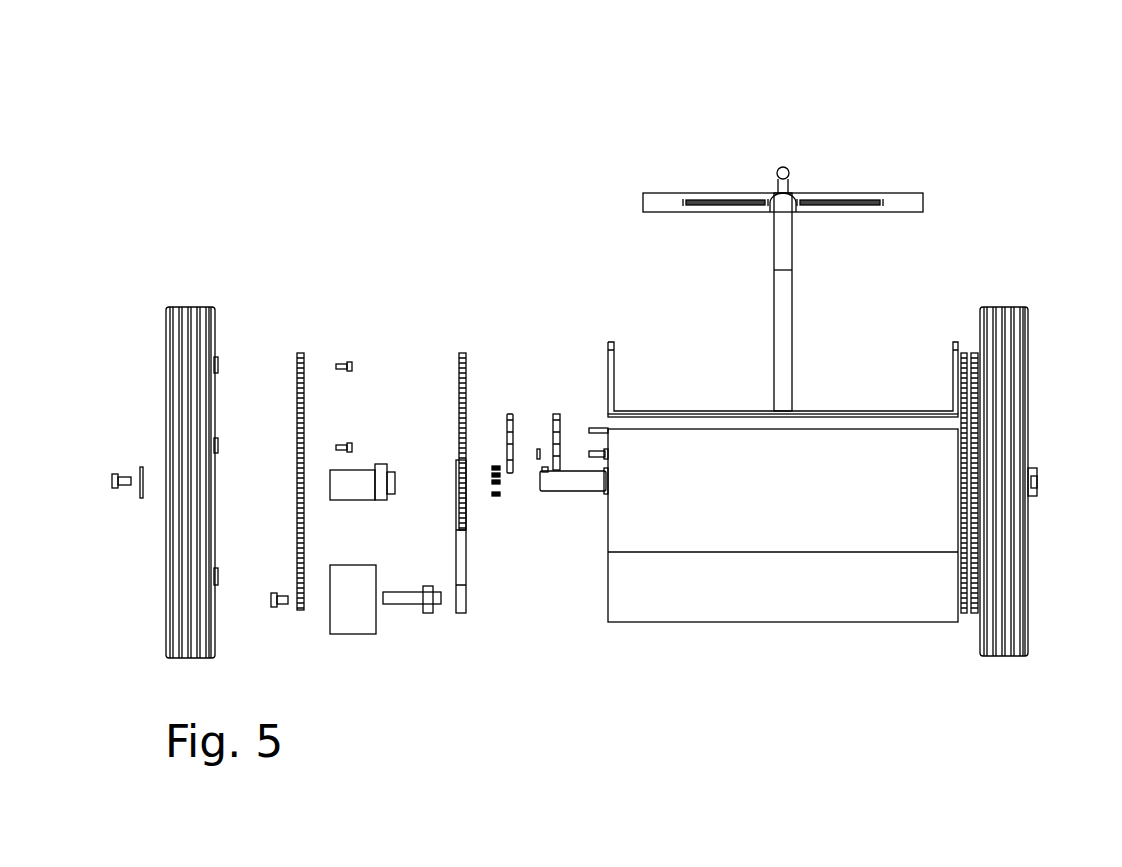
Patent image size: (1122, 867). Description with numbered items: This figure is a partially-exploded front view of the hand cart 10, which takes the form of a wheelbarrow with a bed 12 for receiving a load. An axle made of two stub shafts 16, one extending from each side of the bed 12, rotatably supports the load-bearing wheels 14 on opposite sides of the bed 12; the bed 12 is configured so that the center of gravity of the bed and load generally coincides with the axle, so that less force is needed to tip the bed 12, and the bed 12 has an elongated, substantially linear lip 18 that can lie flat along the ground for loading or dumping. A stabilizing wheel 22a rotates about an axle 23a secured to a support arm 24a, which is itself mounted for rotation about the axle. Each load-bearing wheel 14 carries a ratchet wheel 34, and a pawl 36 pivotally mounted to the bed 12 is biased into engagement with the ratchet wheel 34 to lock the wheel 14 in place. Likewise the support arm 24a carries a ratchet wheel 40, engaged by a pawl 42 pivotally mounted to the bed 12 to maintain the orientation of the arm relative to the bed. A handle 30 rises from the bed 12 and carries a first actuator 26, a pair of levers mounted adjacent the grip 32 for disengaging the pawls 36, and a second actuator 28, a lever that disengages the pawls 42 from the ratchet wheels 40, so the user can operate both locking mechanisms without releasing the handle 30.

The hand cart 10 is at (738, 397).
The bed 12 is at (783, 518).
The load-bearing wheels 14 is at (185, 338).
The stub shafts 16 is at (580, 484).
The lip 18 is at (848, 410).
The stabilizing wheel 22a is at (350, 622).
The axle 23a is at (403, 598).
The support arm 24a is at (462, 565).
The first actuator 26 is at (705, 200).
The second actuator 28 is at (778, 182).
The handle 30 is at (780, 300).
The grip 32 is at (905, 200).
The ratchet wheel 34 is at (303, 352).
The pawl 36 is at (508, 413).
The ratchet wheel 40 is at (463, 352).
The pawl 42 is at (556, 413).